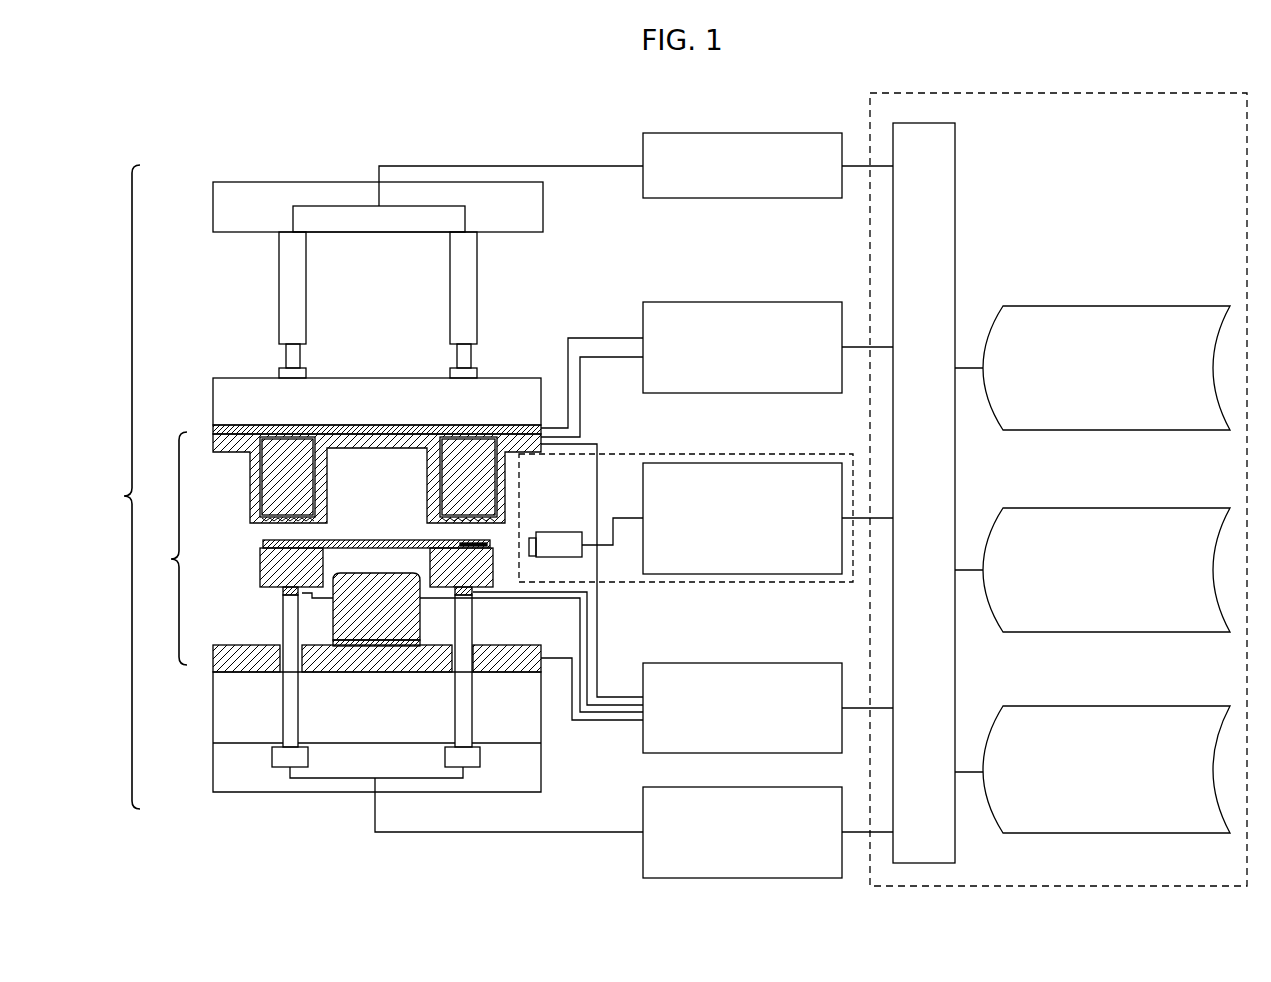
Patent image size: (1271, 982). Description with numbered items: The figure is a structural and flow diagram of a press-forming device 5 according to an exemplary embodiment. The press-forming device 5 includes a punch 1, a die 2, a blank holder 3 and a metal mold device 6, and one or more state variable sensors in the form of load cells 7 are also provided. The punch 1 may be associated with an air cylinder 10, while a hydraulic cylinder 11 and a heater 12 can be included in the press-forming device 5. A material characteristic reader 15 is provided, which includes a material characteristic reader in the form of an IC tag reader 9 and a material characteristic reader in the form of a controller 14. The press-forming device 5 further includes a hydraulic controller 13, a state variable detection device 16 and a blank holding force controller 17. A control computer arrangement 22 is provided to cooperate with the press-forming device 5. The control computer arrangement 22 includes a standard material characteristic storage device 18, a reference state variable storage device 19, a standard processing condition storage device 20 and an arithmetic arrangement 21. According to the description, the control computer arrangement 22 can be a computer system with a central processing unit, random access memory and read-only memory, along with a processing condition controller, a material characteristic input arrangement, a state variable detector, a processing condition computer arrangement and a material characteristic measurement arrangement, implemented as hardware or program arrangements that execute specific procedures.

The punch 1 is at (245, 780).
The die 2 is at (250, 498).
The blank holder 3 is at (262, 572).
The press-forming device 5 is at (122, 487).
The metal mold device 6 is at (169, 548).
The state variable sensor (load cell) 7 is at (450, 757).
The material characteristic reader (IC tag reader) 9 is at (582, 557).
The air cylinder 10 is at (532, 705).
The hydraulic cylinder 11 is at (469, 283).
The heater 12 is at (509, 392).
The hydraulic controller 13 is at (643, 142).
The material characteristic reader (controller) 14 is at (643, 493).
The material characteristic reader 15 is at (730, 454).
The state variable detection device 16 is at (741, 302).
The blank holding force controller 17 is at (643, 858).
The standard material characteristic storage device 18 is at (1111, 306).
The reference state variable storage device 19 is at (1111, 508).
The standard processing condition storage device 20 is at (1111, 706).
The arithmetic arrangement 21 is at (955, 205).
The control computer arrangement 22 is at (870, 118).